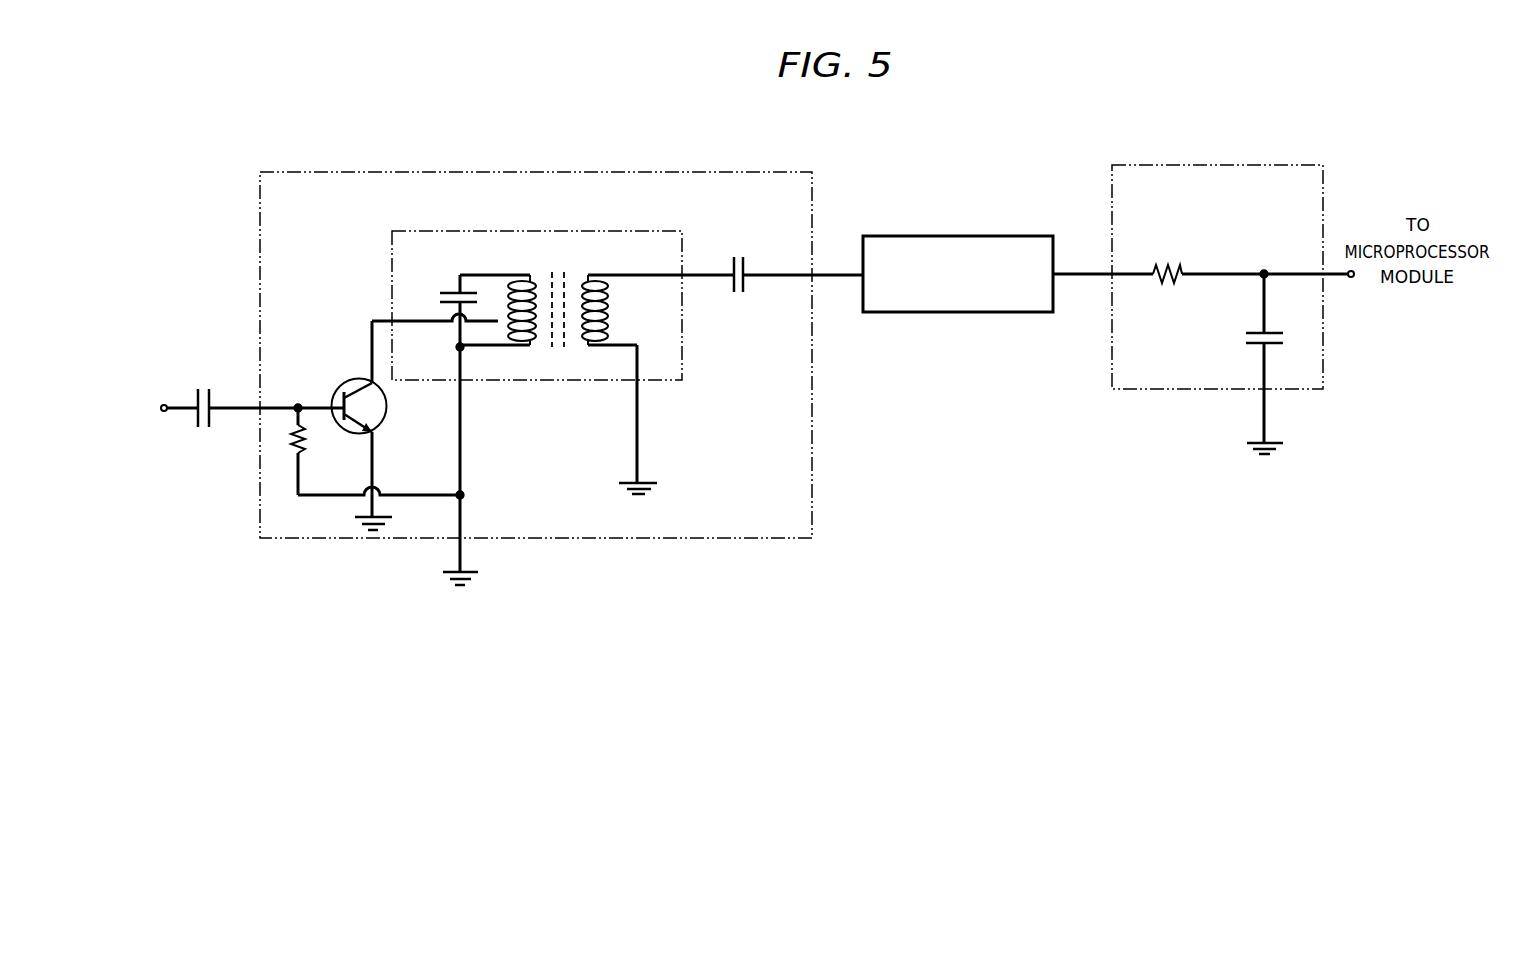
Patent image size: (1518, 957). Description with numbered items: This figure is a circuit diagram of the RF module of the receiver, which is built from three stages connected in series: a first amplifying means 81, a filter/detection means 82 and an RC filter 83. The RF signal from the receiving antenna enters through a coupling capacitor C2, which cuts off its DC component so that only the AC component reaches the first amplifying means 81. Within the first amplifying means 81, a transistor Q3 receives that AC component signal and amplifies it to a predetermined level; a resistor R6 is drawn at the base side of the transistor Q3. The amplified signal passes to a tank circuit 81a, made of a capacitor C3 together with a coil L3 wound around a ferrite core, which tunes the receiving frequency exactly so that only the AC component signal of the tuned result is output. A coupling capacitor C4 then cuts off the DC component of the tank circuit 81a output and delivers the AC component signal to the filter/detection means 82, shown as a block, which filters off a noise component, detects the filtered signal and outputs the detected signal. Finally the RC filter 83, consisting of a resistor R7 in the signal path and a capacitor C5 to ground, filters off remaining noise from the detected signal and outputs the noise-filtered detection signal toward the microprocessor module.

The first amplifying means 81 is at (522, 172).
The tank circuit 81a is at (655, 231).
The filter/detection means 82 is at (903, 312).
The RC filter 83 is at (1140, 389).
The coupling capacitor C2 is at (198, 393).
The capacitor C3 is at (440, 311).
The coupling capacitor C4 is at (740, 287).
The capacitor C5 is at (1251, 358).
The coil L3 is at (596, 297).
The transistor Q3 is at (374, 406).
The bias resistor R6 is at (312, 451).
The resistor R7 is at (1167, 260).